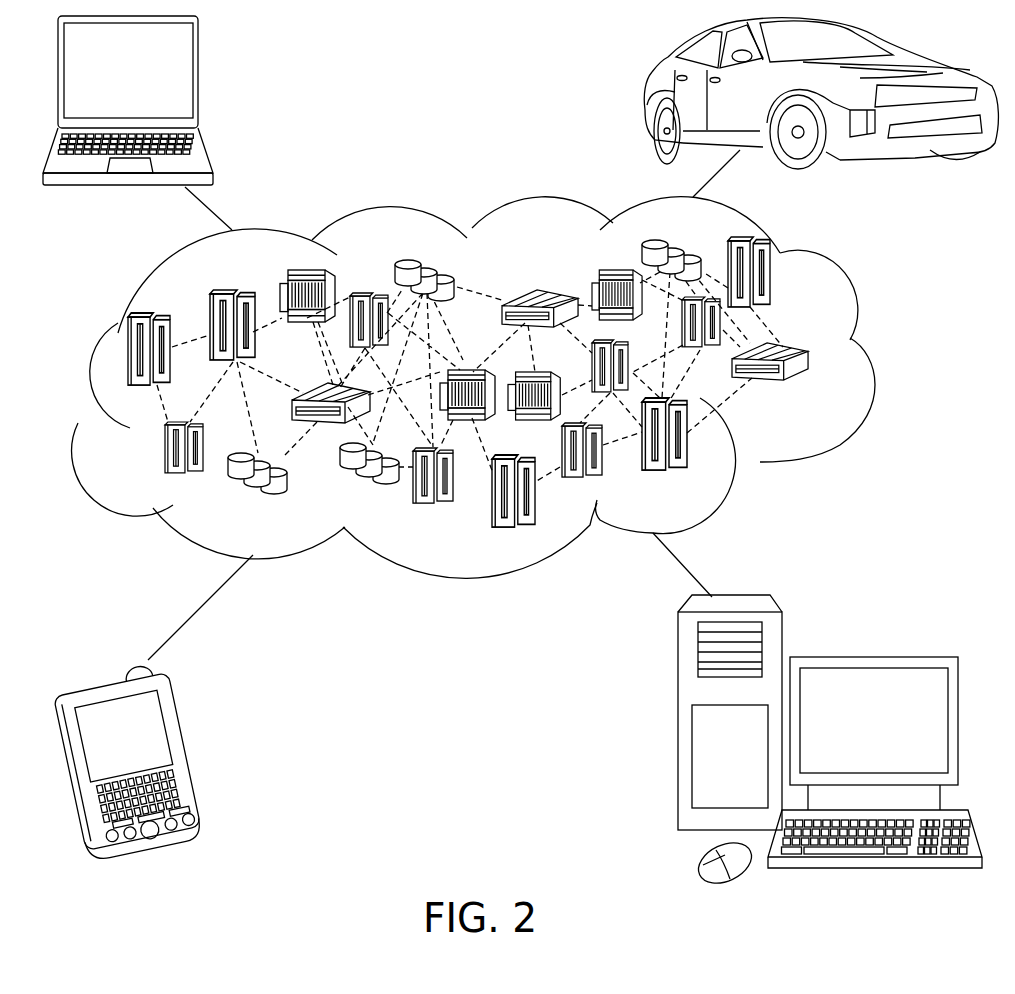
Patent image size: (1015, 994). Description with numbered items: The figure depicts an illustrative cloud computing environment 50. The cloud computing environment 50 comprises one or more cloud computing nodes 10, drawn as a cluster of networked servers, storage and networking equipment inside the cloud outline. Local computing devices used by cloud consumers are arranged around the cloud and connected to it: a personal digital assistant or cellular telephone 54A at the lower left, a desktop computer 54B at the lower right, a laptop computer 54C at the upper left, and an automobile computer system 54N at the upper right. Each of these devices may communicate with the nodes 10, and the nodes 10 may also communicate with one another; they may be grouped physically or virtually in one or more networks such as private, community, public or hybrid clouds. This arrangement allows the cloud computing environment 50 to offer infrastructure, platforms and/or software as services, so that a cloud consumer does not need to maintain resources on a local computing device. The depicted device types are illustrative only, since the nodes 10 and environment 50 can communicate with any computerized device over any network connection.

The cloud computing node 10 is at (822, 394).
The cloud computing environment 50 is at (875, 358).
The personal digital assistant or cellular telephone 54A is at (188, 752).
The desktop computer 54B is at (872, 655).
The laptop computer 54C is at (198, 80).
The automobile computer system 54N is at (648, 97).